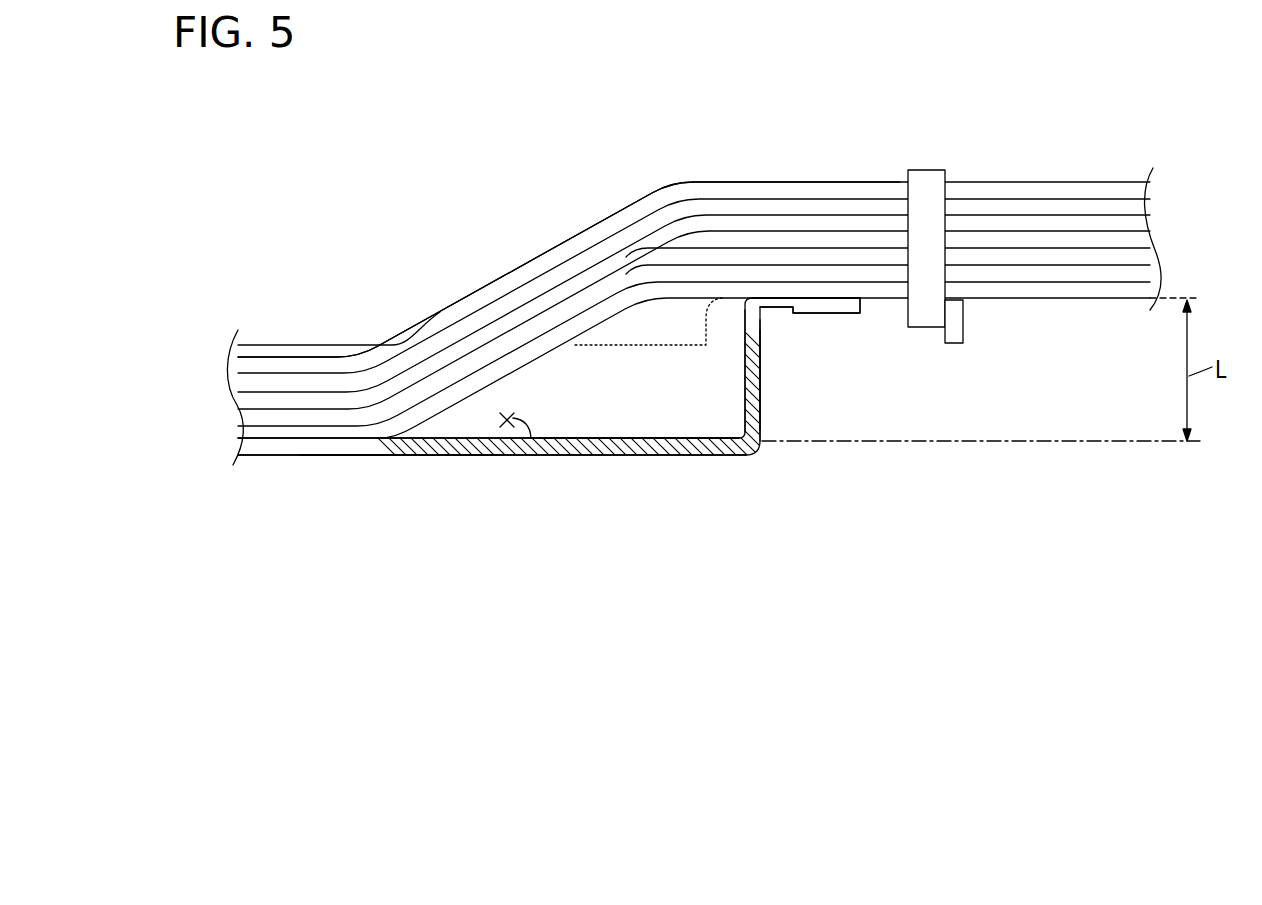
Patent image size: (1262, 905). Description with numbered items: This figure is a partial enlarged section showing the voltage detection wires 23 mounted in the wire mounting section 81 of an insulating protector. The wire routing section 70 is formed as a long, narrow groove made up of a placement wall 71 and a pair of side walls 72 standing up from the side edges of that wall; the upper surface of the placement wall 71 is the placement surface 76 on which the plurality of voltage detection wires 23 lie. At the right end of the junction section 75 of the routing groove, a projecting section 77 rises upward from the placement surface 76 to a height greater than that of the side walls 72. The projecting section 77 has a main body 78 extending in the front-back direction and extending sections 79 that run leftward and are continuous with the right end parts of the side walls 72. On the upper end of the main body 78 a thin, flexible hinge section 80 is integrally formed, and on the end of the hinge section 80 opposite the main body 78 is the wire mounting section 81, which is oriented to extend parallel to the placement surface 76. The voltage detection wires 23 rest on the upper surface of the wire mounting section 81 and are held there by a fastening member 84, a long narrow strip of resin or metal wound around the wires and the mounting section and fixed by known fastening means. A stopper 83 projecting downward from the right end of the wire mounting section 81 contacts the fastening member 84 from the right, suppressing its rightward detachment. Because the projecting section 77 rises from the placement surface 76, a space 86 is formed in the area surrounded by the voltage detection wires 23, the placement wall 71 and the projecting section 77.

The voltage detection wires 23 is at (482, 347).
The wire routing section 70 is at (318, 467).
The placement wall 71 is at (447, 444).
The side walls 72 is at (577, 362).
The junction section 75 is at (381, 455).
The placement surface 76 is at (622, 432).
The projecting section 77 is at (760, 420).
The main body 78 is at (760, 388).
The extending sections 79 is at (727, 318).
The hinge section 80 is at (775, 303).
The wire mounting section 81 is at (872, 308).
The stopper 83 is at (963, 335).
The fastening member 84 is at (930, 168).
The space 86 is at (528, 440).